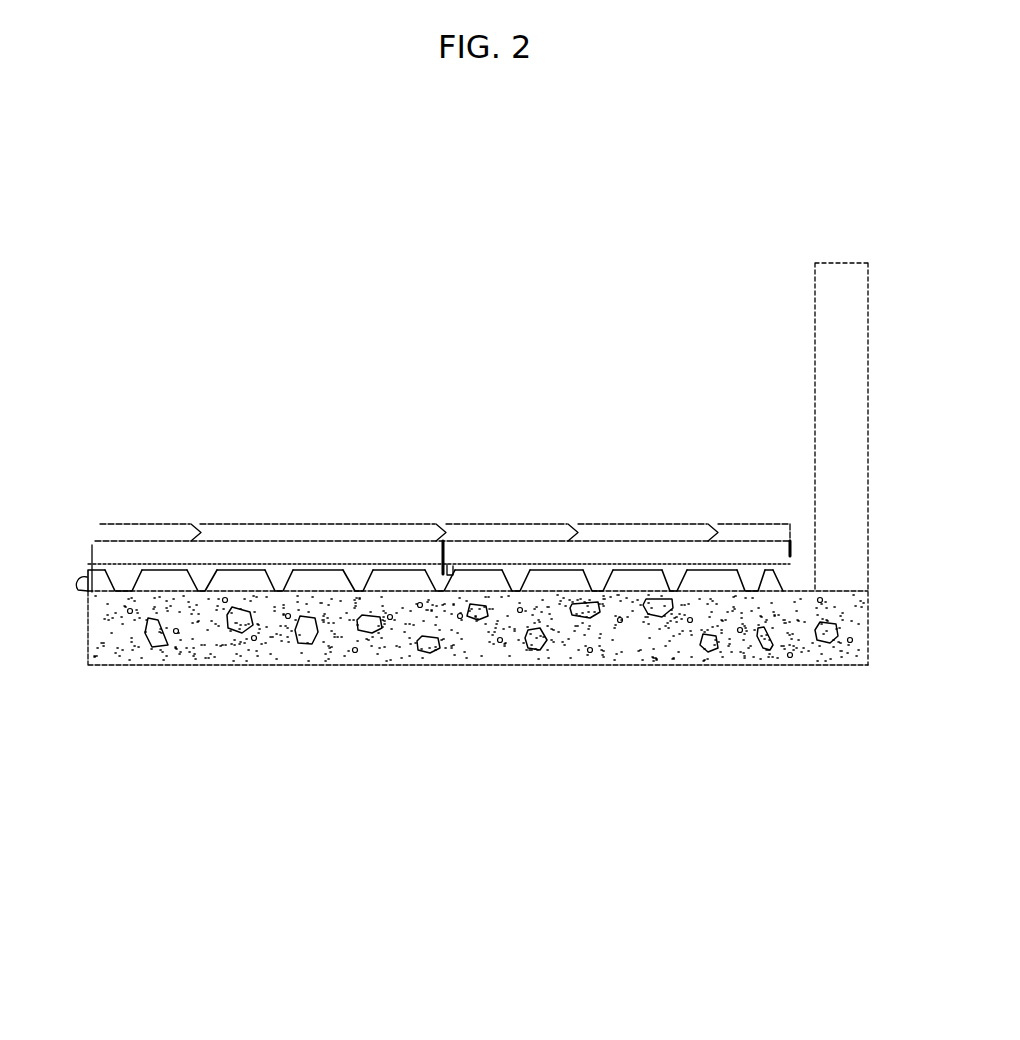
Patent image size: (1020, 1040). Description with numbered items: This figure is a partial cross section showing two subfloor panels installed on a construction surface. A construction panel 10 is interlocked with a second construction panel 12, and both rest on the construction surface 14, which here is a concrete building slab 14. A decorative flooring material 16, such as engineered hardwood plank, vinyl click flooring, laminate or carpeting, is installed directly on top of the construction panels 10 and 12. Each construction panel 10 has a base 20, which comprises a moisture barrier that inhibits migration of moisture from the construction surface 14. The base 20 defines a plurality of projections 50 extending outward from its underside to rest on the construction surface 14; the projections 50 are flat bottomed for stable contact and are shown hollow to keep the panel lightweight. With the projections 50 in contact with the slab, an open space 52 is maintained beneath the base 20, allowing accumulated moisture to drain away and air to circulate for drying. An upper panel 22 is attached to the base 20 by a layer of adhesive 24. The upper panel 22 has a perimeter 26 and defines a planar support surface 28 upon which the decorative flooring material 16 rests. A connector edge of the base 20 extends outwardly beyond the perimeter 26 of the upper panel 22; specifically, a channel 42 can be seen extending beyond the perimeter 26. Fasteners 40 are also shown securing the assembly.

The construction panel 10 is at (345, 529).
The second construction panel 12 is at (506, 529).
The construction surface 14 is at (748, 650).
The decorative flooring material 16 is at (748, 527).
The base 20 is at (532, 567).
The upper panel 22 is at (317, 552).
The layer of adhesive 24 is at (600, 565).
The perimeter 26 is at (92, 554).
The planar support surface 28 is at (241, 577).
The fastener 40 is at (443, 575).
The channel 42 is at (83, 580).
The projections 50 is at (127, 580).
The open space 52 is at (241, 578).